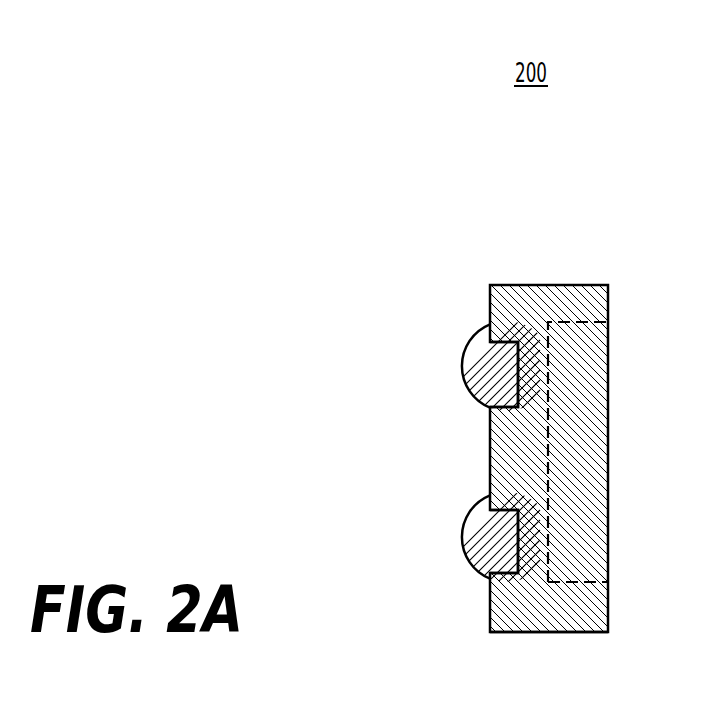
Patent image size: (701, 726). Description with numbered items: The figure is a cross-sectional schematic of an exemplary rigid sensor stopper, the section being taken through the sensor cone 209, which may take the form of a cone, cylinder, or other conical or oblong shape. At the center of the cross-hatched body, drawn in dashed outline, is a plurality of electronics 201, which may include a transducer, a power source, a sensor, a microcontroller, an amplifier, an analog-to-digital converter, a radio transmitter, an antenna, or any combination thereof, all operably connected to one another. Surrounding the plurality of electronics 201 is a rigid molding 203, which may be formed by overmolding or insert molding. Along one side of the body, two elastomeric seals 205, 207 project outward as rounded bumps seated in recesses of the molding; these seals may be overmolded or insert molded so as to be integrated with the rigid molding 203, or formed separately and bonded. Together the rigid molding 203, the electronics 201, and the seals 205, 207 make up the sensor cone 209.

The plurality of electronics 201 is at (554, 318).
The rigid molding 203 is at (540, 610).
The elastomeric seal 205 is at (477, 377).
The elastomeric seal 207 is at (477, 542).
The sensor cone 209 is at (500, 281).